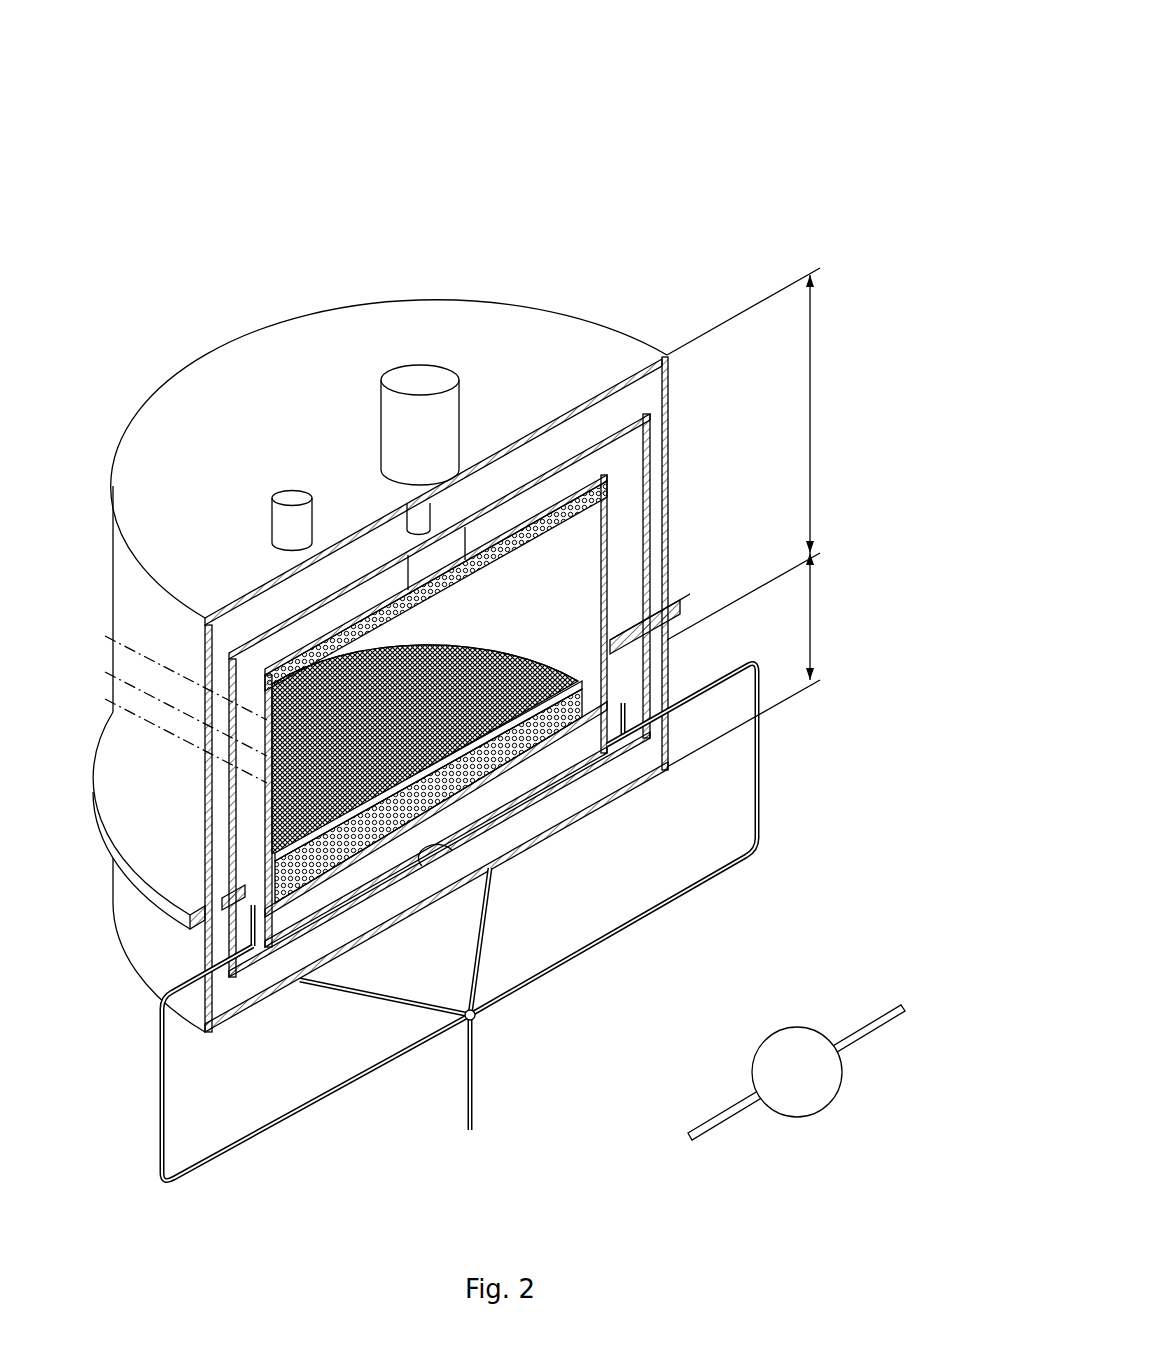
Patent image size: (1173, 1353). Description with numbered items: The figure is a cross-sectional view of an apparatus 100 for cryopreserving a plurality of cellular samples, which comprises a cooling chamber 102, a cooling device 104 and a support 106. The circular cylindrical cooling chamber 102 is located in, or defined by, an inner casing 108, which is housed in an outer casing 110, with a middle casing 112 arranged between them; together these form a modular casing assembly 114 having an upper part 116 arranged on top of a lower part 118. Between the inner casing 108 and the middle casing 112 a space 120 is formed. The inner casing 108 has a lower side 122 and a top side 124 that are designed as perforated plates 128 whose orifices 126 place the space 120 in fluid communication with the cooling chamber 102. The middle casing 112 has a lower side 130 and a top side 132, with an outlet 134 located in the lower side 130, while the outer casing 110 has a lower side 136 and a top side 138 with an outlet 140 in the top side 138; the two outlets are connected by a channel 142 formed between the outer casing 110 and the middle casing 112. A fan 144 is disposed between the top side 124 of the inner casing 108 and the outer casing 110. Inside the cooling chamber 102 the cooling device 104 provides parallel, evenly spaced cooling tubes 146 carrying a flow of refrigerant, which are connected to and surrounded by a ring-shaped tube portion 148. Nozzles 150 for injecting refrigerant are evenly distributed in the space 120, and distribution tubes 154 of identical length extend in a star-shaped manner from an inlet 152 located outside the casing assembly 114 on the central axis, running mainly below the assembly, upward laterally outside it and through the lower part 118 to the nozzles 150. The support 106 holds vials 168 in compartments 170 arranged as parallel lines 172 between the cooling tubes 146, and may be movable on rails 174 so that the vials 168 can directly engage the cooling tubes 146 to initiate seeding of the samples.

The apparatus 100 is at (772, 174).
The cooling chamber 102 is at (543, 575).
The cooling device 104 is at (808, 1092).
The support 106 is at (660, 623).
The inner casing 108 is at (622, 553).
The outer casing 110 is at (583, 303).
The middle casing 112 is at (668, 430).
The modular casing assembly 114 is at (902, 442).
The upper part 116 is at (812, 415).
The lower part 118 is at (812, 618).
The space 120 is at (610, 508).
The lower side 122 is at (350, 868).
The top side 124 is at (503, 520).
The orifices 126 is at (305, 633).
The perforated plates 128 is at (400, 610).
The lower side 130 is at (613, 807).
The top side 132 is at (560, 447).
The outlet 134 is at (437, 853).
The lower side 136 is at (580, 823).
The top side 138 is at (430, 325).
The outlet 140 is at (287, 492).
The channel 142 is at (655, 468).
The fan 144 is at (435, 540).
The cooling tubes 146 is at (503, 792).
The ring-shaped tube portion 148 is at (300, 982).
The nozzles 150 is at (222, 898).
The inlet 152 is at (478, 1020).
The distribution tubes 154 is at (657, 920).
The vials 168 is at (493, 650).
The compartments 170 is at (517, 650).
The lines 172 is at (140, 690).
The rails 174 is at (540, 663).